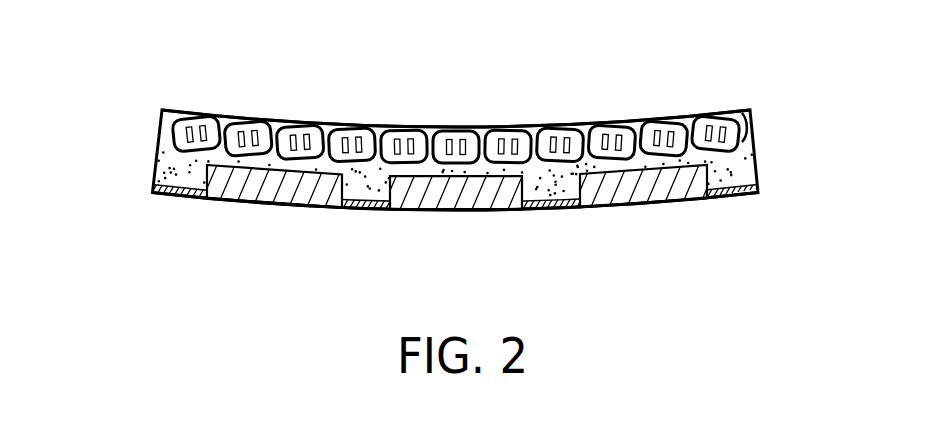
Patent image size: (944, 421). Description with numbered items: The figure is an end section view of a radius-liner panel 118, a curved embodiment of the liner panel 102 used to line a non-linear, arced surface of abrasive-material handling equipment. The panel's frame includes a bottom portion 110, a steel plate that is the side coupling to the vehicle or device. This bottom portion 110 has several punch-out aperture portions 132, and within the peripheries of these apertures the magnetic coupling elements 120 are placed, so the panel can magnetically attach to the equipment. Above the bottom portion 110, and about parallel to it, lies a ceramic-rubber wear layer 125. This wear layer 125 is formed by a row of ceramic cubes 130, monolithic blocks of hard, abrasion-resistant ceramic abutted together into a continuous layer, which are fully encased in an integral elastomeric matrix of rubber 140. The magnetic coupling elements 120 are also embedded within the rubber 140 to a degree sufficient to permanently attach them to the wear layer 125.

The liner panel 102 is at (188, 90).
The bottom portion 110 is at (163, 197).
The radius-liner panel 118 is at (175, 210).
The magnetic coupling element 120 is at (297, 190).
The ceramic-rubber wear layer 125 is at (530, 126).
The ceramic cubes 130 is at (438, 128).
The punch-out aperture portions 132 is at (302, 224).
The rubber 140 is at (170, 163).